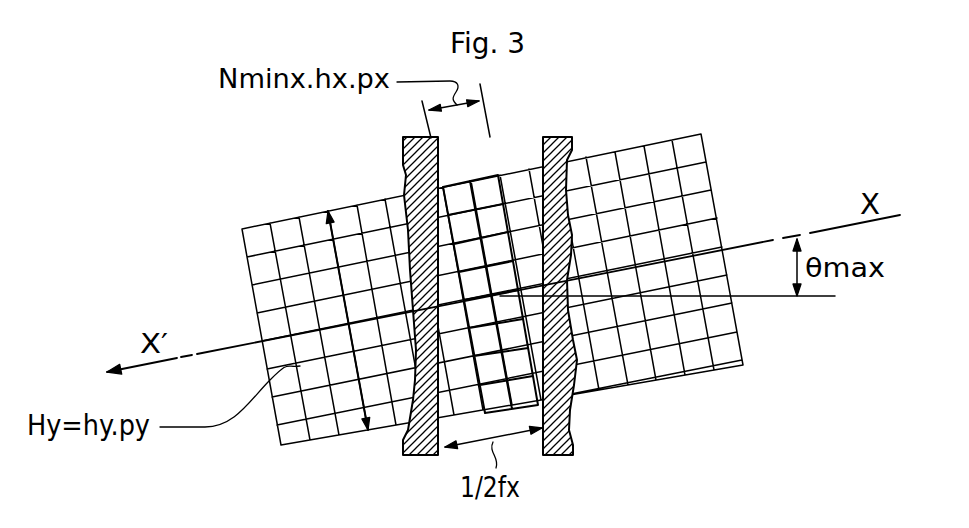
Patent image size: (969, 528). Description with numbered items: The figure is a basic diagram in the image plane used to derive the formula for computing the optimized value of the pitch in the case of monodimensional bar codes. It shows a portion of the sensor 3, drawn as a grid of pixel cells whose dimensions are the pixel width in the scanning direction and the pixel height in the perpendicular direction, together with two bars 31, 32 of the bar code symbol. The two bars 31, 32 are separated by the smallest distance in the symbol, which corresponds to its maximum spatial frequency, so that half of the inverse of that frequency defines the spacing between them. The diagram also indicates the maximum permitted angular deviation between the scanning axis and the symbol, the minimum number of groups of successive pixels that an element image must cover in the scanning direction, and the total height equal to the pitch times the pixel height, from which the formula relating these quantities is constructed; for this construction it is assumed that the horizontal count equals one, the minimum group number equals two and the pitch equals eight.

The sensor 3 is at (303, 440).
The bar 31 is at (415, 455).
The bar 32 is at (565, 457).